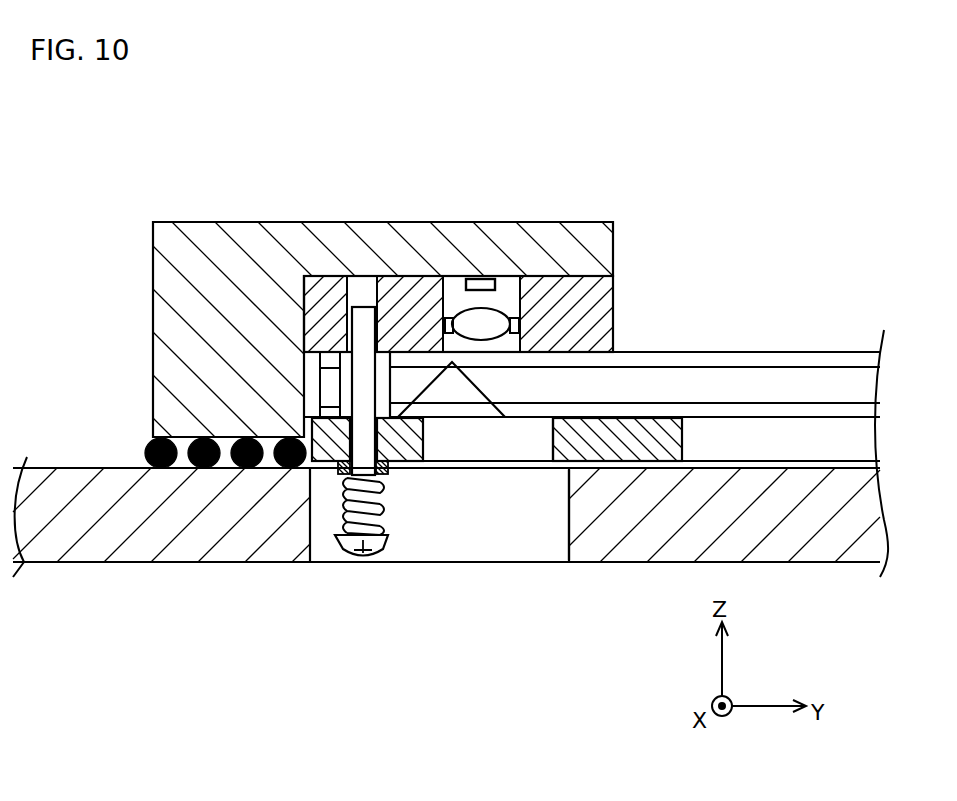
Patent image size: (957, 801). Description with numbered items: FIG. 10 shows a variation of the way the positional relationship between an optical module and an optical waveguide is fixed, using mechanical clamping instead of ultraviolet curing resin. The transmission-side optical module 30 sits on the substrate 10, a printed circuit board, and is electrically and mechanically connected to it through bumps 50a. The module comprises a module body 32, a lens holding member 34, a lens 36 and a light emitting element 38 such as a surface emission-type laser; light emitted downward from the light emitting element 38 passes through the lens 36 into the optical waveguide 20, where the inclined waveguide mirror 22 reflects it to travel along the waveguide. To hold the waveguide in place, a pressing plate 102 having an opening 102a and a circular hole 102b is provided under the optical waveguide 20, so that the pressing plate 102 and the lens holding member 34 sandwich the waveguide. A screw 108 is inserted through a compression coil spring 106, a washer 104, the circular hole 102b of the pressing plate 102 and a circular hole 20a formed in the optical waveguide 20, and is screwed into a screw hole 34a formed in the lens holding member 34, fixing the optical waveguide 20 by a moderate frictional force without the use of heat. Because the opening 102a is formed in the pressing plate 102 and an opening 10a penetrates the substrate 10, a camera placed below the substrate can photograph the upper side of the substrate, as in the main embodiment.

The substrate 10 is at (145, 562).
The opening 10a is at (569, 547).
The optical waveguide 20 is at (808, 352).
The circular hole 20a is at (355, 391).
The waveguide mirror 22 is at (497, 418).
The transmission-side optical module 30 is at (357, 187).
The module body 32 is at (247, 222).
The lens holding member 34 is at (613, 315).
The screw hole 34a is at (364, 298).
The lens 36 is at (505, 310).
The light emitting element 38 is at (483, 278).
The bump 50a is at (148, 440).
The pressing plate 102 is at (682, 438).
The opening 102a is at (549, 443).
The circular hole 102b is at (375, 435).
The washer 104 is at (388, 474).
The compression coil spring 106 is at (347, 503).
The screw 108 is at (342, 553).